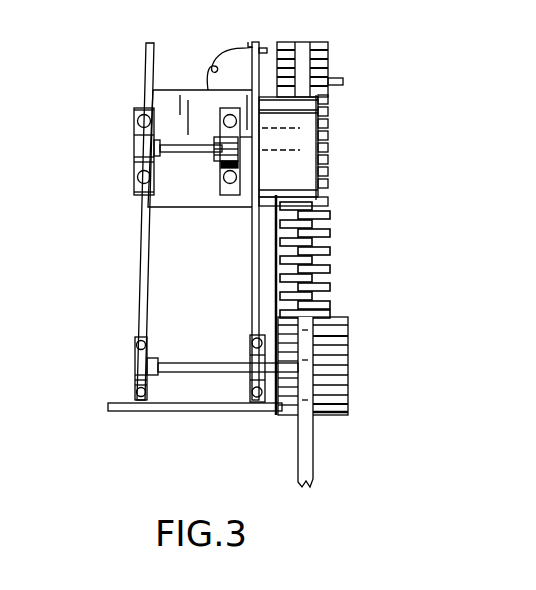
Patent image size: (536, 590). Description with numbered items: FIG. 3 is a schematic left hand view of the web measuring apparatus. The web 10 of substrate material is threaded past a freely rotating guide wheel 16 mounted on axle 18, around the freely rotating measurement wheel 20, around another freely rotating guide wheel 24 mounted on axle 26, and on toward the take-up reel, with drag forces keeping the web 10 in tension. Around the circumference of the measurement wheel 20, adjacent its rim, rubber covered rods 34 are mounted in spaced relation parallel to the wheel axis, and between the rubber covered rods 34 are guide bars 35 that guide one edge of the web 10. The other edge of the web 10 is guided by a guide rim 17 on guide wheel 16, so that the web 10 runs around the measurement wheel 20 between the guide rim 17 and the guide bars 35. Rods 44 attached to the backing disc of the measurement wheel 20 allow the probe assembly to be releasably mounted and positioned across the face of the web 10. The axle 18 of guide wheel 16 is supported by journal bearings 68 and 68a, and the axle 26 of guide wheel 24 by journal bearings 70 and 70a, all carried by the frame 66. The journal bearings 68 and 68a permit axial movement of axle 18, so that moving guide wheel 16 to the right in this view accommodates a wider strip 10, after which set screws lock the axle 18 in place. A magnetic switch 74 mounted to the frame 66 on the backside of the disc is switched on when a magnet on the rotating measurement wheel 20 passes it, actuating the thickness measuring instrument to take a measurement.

The web 10 is at (305, 455).
The guide wheel 16 is at (307, 162).
The guide rim 17 is at (320, 180).
The axle 18 is at (192, 148).
The measurement wheel 20 is at (349, 123).
The guide wheel 24 is at (337, 335).
The axle 26 is at (191, 365).
The rubber covered rods 34 is at (320, 222).
The guide bars 35 is at (285, 213).
The rods 44 is at (343, 80).
The frame 66 is at (192, 90).
The journal bearing 68 is at (143, 145).
The journal bearing 68a is at (236, 148).
The journal bearing 70 is at (137, 362).
The journal bearing 70a is at (252, 375).
The magnetic switch 74 is at (262, 45).